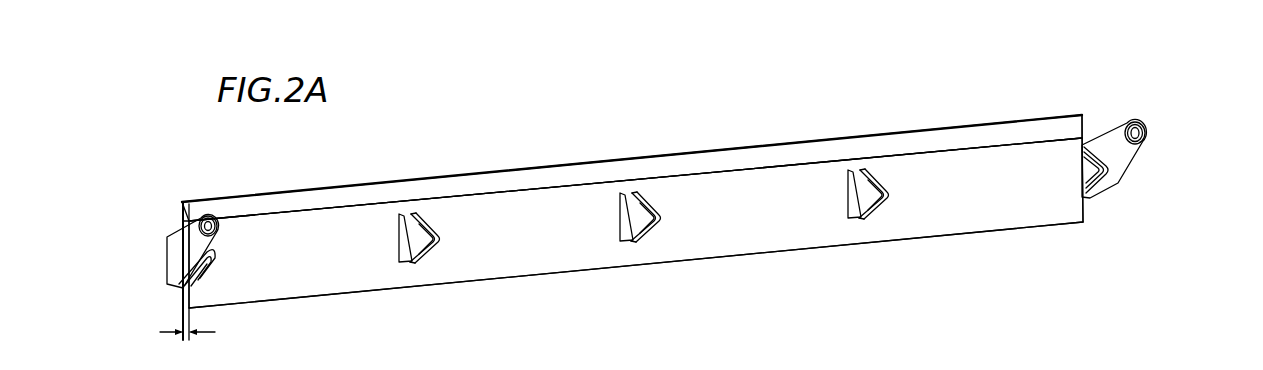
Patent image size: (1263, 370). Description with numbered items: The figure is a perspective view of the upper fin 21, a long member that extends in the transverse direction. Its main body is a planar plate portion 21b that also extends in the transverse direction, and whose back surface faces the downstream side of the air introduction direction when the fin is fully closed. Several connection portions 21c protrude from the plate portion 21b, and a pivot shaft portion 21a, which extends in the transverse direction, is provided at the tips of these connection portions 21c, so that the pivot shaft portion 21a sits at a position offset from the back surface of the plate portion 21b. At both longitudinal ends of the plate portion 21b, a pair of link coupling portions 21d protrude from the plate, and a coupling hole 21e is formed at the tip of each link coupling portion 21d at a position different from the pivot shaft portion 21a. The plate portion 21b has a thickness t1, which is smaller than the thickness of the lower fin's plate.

The upper fin 21 is at (701, 134).
The pivot shaft portion 21a is at (878, 166).
The plate portion 21b is at (1002, 167).
The connection portion 21c is at (858, 192).
The link coupling portion 21d is at (191, 255).
The coupling hole 21e is at (200, 217).
The thickness of the plate portion t1 is at (201, 333).